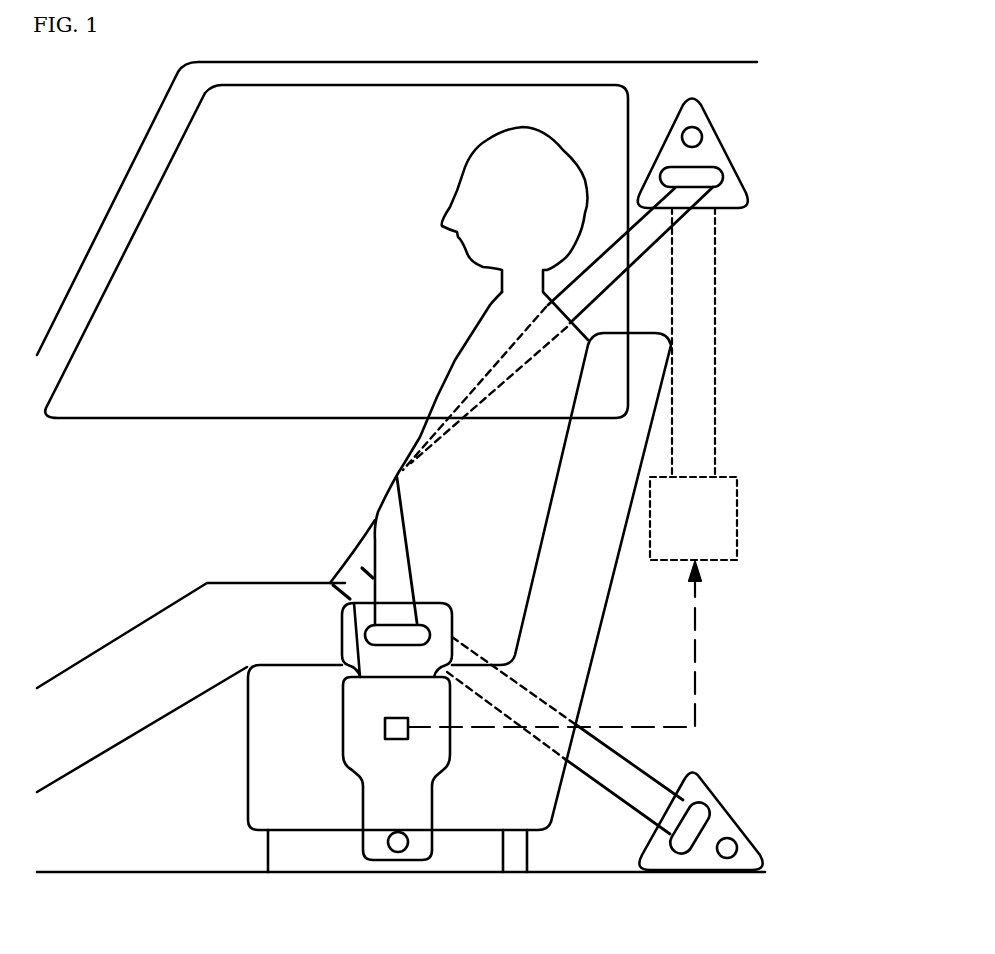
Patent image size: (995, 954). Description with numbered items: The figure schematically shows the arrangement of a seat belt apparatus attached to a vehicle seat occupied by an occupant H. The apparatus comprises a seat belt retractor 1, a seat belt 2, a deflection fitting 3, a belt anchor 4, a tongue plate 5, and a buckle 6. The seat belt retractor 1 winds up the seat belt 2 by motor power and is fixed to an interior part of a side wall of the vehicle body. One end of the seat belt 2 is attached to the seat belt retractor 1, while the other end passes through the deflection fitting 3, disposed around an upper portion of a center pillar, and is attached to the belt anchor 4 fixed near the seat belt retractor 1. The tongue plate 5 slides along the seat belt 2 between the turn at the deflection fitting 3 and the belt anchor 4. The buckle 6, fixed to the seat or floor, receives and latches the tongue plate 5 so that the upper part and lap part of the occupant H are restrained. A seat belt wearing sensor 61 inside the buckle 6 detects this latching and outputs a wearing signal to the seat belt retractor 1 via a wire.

The seat belt retractor 1 is at (737, 518).
The seat belt 2 is at (650, 250).
The deflection fitting 3 is at (727, 147).
The belt anchor 4 is at (730, 807).
The tongue plate 5 is at (342, 626).
The buckle 6 is at (450, 750).
The seat belt wearing sensor 61 is at (385, 728).
The occupant H is at (445, 388).